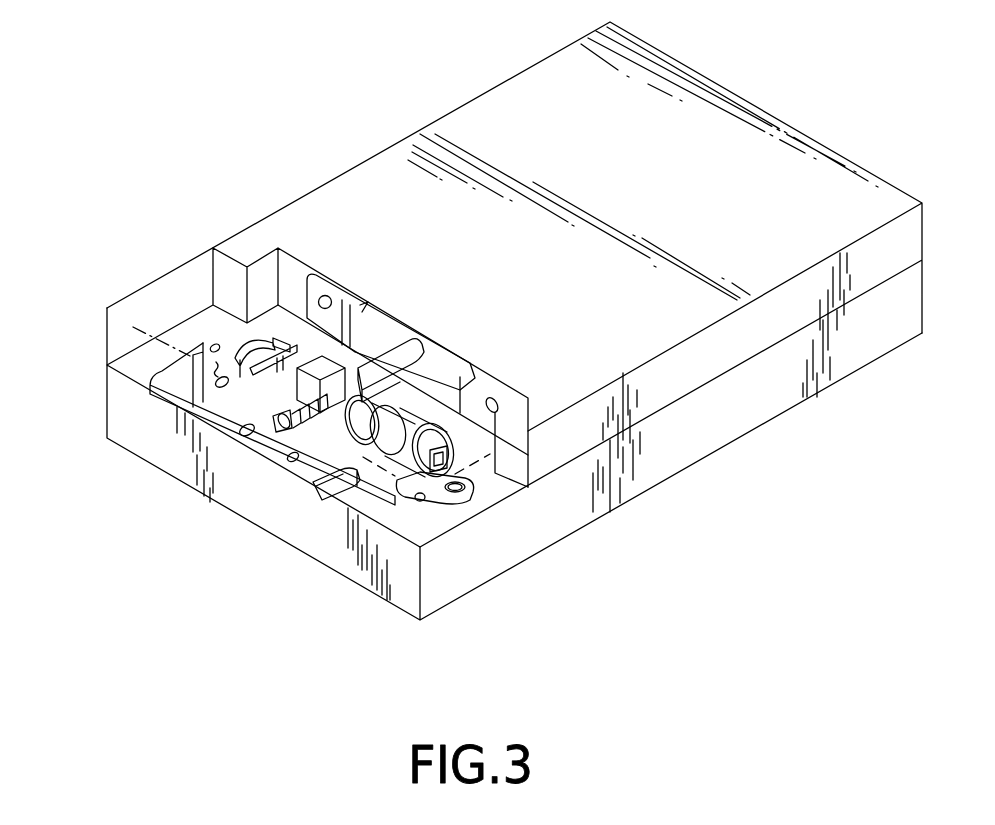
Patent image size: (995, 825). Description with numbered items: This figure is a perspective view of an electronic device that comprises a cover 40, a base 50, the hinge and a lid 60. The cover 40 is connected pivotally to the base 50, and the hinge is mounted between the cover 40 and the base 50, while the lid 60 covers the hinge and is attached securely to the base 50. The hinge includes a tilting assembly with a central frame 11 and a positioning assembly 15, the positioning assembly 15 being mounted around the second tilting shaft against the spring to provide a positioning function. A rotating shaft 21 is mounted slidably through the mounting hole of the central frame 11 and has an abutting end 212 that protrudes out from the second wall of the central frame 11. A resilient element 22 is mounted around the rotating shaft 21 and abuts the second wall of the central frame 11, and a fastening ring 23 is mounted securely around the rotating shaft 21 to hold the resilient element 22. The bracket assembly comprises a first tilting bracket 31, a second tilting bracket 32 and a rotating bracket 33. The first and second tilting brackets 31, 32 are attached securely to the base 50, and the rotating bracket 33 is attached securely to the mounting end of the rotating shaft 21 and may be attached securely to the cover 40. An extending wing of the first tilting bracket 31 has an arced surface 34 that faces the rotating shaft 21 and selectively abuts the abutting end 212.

The central frame 11 is at (298, 358).
The positioning assembly 15 is at (432, 400).
The rotating shaft 21 is at (403, 350).
The resilient element 22 is at (276, 410).
The fastening ring 23 is at (297, 422).
The abutting end 212 is at (273, 410).
The first tilting bracket 31 is at (167, 373).
The second tilting bracket 32 is at (445, 500).
The rotating bracket 33 is at (377, 337).
The arced surface 34 is at (357, 470).
The cover 40 is at (747, 142).
The base 50 is at (808, 372).
The lid 60 is at (157, 292).